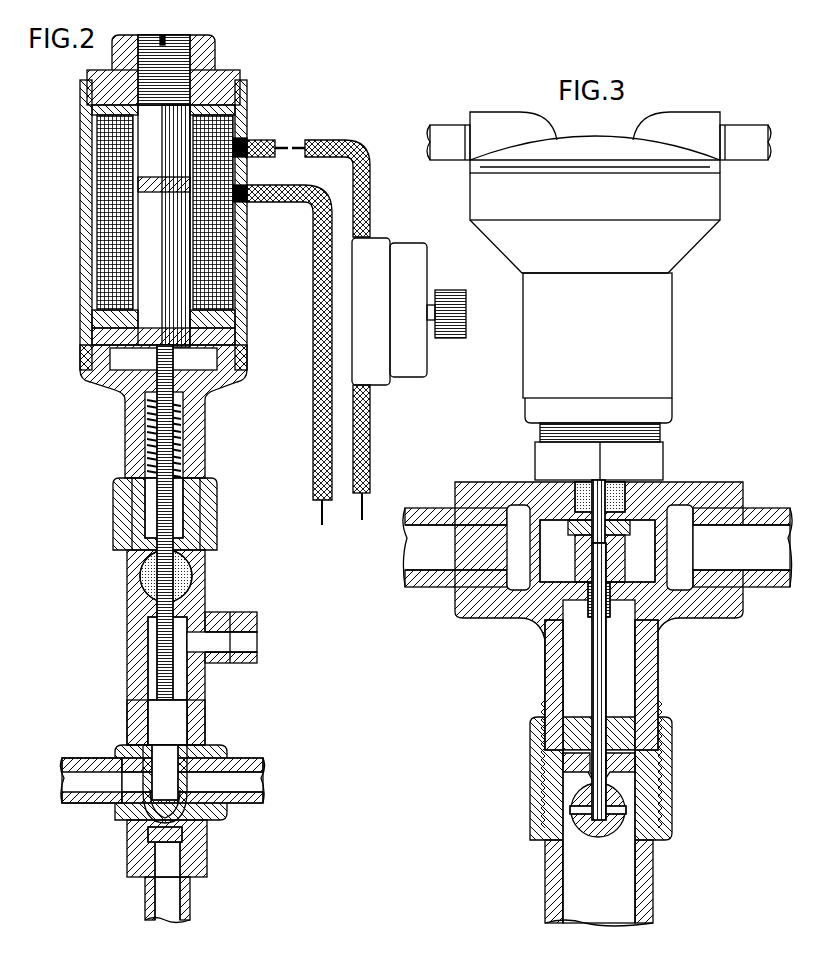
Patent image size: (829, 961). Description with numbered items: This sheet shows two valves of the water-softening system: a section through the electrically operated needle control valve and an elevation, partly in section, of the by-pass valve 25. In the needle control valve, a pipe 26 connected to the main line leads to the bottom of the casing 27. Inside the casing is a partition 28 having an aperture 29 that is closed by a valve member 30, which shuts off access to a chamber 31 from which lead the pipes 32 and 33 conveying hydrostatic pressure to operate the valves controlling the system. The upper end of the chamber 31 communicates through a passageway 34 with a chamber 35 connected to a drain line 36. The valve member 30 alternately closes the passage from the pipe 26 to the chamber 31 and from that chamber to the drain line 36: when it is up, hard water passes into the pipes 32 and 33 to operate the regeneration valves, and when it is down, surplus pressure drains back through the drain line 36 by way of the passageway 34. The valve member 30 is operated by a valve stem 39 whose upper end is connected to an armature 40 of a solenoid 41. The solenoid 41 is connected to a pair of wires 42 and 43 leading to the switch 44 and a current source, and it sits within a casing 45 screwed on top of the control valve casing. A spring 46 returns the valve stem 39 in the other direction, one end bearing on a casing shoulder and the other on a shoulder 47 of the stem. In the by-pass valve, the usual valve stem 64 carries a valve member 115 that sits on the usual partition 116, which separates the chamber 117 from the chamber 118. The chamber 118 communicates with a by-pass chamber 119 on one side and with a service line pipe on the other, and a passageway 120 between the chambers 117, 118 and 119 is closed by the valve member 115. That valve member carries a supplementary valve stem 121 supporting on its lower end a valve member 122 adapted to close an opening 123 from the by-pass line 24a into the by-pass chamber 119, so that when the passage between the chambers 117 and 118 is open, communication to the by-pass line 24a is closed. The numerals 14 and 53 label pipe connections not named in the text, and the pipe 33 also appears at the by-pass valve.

In FIG. 3, the supply pipe 14 is at (420, 507).
In FIG. 3, the by-pass line 24a is at (653, 878).
In FIG. 3, the by-pass valve 25 is at (673, 350).
In FIG. 2, the pipe 26 is at (190, 912).
In FIG. 2, the casing 27 is at (207, 863).
In FIG. 2, the partition 28 is at (207, 818).
In FIG. 2, the aperture 29 is at (148, 835).
In FIG. 2, the valve member 30 is at (150, 807).
In FIG. 2, the chamber 31 is at (187, 752).
In FIG. 2, the pipe 32 is at (66, 760).
In FIG. 2, the pipe 33 is at (263, 770).
In FIG. 3, the pipe 33 is at (437, 163).
In FIG. 2, the passageway 34 is at (207, 727).
In FIG. 2, the chamber 35 is at (178, 680).
In FIG. 2, the drain line 36 is at (258, 628).
In FIG. 2, the valve stem 39 is at (155, 628).
In FIG. 2, the armature 40 is at (155, 337).
In FIG. 2, the solenoid 41 is at (220, 308).
In FIG. 2, the wire 42 is at (288, 203).
In FIG. 2, the wire 43 is at (338, 140).
In FIG. 2, the switch 44 is at (412, 243).
In FIG. 2, the casing 45 is at (235, 268).
In FIG. 2, the spring 46 is at (125, 410).
In FIG. 2, the shoulder 47 is at (125, 456).
In FIG. 3, the pipe 53 is at (755, 160).
In FIG. 3, the valve stem 64 is at (592, 495).
In FIG. 3, the valve member 115 is at (568, 548).
In FIG. 3, the partition 116 is at (660, 553).
In FIG. 3, the chamber 117 is at (507, 547).
In FIG. 3, the chamber 118 is at (680, 593).
In FIG. 3, the by-pass chamber 119 is at (555, 672).
In FIG. 3, the passageway 120 is at (583, 592).
In FIG. 3, the supplementary valve stem 121 is at (610, 663).
In FIG. 3, the valve member 122 is at (598, 837).
In FIG. 3, the opening 123 is at (587, 760).